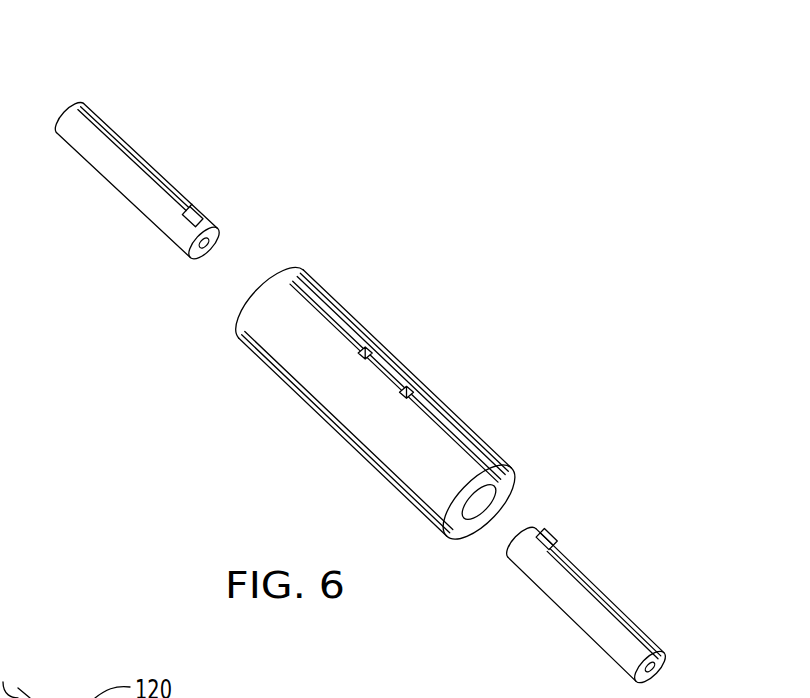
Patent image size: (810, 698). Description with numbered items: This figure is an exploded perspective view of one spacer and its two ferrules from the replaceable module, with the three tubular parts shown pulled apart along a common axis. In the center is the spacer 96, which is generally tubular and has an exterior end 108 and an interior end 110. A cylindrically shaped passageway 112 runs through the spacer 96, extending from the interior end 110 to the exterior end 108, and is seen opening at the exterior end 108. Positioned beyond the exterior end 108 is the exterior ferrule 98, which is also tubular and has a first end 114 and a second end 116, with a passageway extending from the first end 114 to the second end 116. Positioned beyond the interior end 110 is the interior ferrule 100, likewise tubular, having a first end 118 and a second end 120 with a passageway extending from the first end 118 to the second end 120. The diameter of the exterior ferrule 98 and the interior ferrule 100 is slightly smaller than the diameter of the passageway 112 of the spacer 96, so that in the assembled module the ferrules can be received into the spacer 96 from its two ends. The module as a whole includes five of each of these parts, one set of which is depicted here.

The spacer 96 is at (385, 439).
The exterior ferrule 98 is at (636, 588).
The interior ferrule 100 is at (191, 141).
The exterior end 108 is at (500, 478).
The interior end 110 is at (256, 306).
The passageway 112 is at (477, 503).
The first end 114 is at (660, 667).
The second end 116 is at (523, 530).
The first end 118 is at (220, 242).
The second end 120 is at (70, 107).